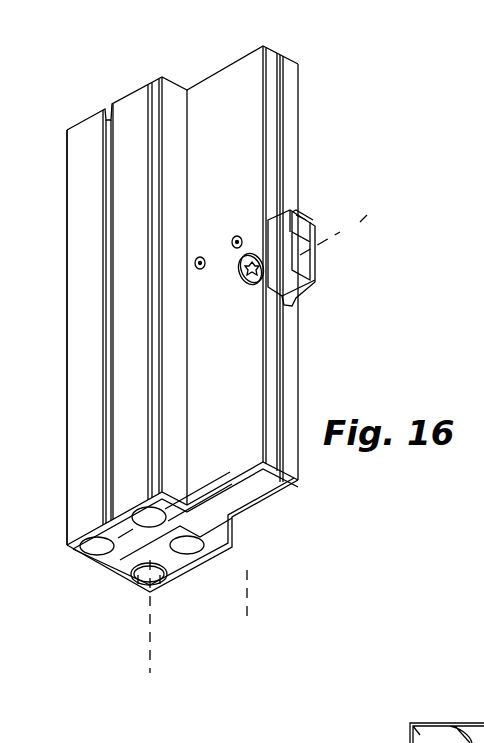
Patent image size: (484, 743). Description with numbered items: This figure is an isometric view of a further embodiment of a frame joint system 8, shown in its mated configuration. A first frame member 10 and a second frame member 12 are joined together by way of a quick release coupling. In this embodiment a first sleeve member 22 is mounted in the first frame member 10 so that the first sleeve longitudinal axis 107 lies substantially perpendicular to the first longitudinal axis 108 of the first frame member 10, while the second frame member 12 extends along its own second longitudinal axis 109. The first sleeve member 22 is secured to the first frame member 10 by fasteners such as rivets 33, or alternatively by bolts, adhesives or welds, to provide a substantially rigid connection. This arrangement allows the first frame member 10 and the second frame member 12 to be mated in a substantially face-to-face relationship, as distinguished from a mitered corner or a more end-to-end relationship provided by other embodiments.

The frame joint system 8 is at (348, 59).
The first frame member 10 is at (225, 93).
The second frame member 12 is at (85, 178).
The first sleeve member 22 is at (292, 292).
The rivets 33 is at (200, 257).
The first sleeve longitudinal axis 107 is at (335, 235).
The first longitudinal axis 108 is at (247, 600).
The second longitudinal axis 109 is at (150, 660).